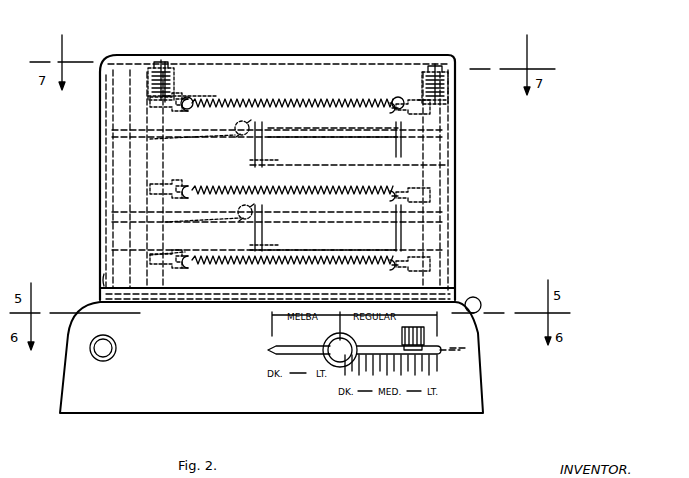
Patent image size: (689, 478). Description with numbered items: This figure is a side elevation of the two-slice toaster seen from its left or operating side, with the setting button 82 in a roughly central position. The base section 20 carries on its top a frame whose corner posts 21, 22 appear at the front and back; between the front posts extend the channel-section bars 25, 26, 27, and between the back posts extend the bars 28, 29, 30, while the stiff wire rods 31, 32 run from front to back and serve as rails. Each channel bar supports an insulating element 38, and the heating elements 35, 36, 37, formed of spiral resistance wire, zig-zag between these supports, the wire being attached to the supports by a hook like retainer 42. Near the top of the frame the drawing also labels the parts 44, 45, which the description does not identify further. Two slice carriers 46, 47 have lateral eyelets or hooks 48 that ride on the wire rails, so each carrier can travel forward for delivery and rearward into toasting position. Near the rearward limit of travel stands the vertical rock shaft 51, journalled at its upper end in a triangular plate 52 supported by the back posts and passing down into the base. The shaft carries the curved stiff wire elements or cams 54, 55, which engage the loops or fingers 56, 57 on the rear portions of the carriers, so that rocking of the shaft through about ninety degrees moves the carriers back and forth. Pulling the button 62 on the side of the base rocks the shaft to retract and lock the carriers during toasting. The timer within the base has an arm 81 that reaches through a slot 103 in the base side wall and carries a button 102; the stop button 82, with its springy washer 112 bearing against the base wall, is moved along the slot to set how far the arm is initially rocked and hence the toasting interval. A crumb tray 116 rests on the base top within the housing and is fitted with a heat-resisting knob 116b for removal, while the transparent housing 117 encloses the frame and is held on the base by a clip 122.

The housing 117 is at (346, 55).
The corner post 22 is at (130, 156).
The corner post 21 is at (448, 165).
The vertical rock shaft 51 is at (147, 143).
The insulating element 38 is at (112, 130).
The solenoid 45 is at (152, 70).
The triangular plate 52 is at (165, 60).
The armature link 44 is at (180, 94).
The bar 28 is at (150, 103).
The bar 29 is at (150, 192).
The bar 30 is at (150, 264).
The bar 25 is at (440, 108).
The bar 26 is at (440, 196).
The bar 27 is at (440, 265).
The heating element 35 is at (300, 99).
The heating element 36 is at (232, 186).
The heating element 37 is at (240, 266).
The hook like retainer 42 is at (190, 98).
The bar 31 is at (341, 125).
The lateral eyelets or hooks 48 is at (265, 124).
The slice carrier 46 is at (330, 167).
The slice carrier 47 is at (325, 252).
The loop or finger 56 is at (235, 126).
The loop or finger 57 is at (242, 220).
The curved stiff wire element or cam 54 is at (175, 139).
The bar 32 is at (215, 222).
The curved stiff wire element or cam 55 is at (185, 254).
The tray 116 is at (188, 300).
The clip 122 is at (100, 290).
The base section 20 is at (271, 357).
The button 62 is at (100, 350).
The knob 116b is at (481, 300).
The arm 81 is at (440, 366).
The washer 112 is at (320, 350).
The button 82 is at (328, 340).
The slot 103 is at (378, 348).
The button 102 is at (460, 334).